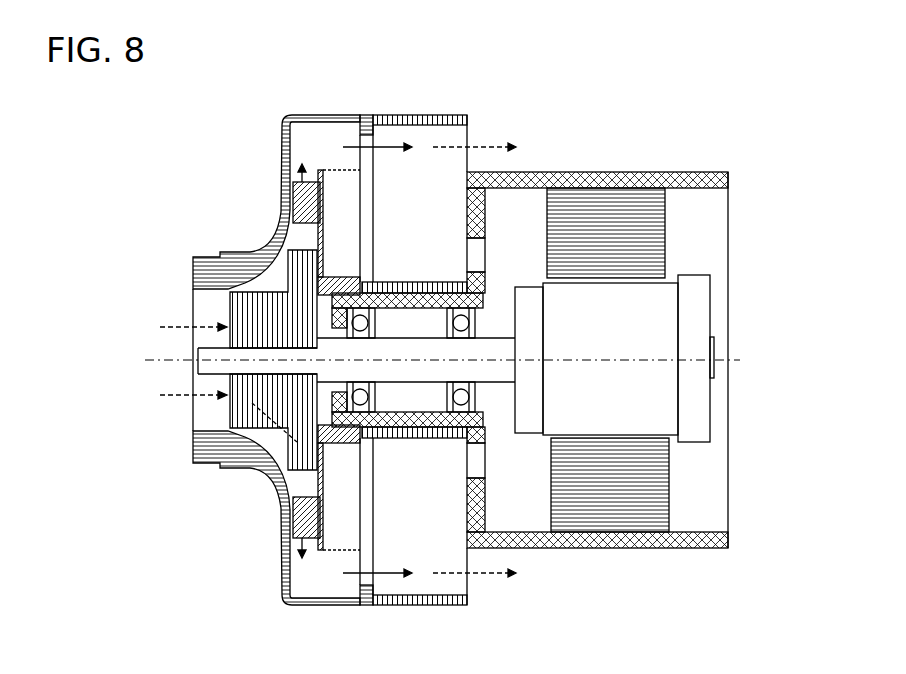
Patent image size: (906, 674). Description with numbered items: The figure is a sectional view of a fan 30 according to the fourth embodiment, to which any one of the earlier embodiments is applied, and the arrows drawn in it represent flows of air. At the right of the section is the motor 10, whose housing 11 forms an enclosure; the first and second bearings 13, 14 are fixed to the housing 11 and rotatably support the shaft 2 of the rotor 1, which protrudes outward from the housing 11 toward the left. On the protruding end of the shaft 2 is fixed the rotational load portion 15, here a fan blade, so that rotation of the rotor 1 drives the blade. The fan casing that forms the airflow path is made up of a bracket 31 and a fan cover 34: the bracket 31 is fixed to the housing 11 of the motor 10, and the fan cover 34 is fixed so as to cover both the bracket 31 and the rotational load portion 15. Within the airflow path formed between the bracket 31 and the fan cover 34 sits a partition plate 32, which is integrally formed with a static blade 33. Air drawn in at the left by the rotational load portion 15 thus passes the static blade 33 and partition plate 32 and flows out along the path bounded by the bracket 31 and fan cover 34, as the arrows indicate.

The rotor 1 is at (695, 336).
The shaft 2 is at (224, 356).
The motor 10 is at (704, 246).
The housing 11 is at (649, 546).
The first bearing 13 is at (466, 323).
The second bearing 14 is at (374, 397).
The rotational load portion 15 is at (246, 322).
The fan 30 is at (601, 108).
The bracket 31 is at (452, 114).
The partition plate 32 is at (323, 245).
The static blade 33 is at (318, 190).
The fan cover 34 is at (273, 258).